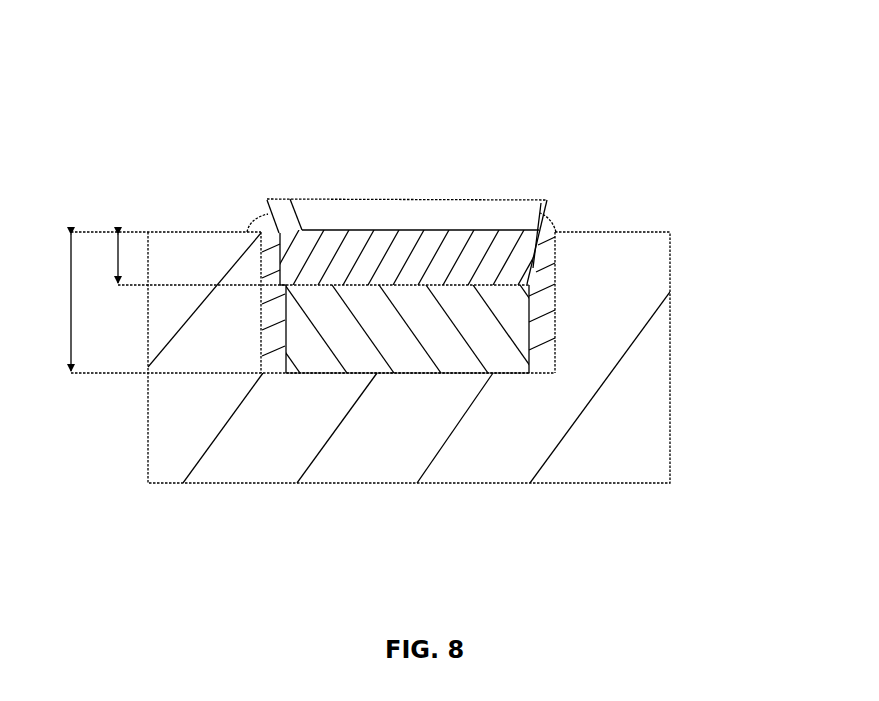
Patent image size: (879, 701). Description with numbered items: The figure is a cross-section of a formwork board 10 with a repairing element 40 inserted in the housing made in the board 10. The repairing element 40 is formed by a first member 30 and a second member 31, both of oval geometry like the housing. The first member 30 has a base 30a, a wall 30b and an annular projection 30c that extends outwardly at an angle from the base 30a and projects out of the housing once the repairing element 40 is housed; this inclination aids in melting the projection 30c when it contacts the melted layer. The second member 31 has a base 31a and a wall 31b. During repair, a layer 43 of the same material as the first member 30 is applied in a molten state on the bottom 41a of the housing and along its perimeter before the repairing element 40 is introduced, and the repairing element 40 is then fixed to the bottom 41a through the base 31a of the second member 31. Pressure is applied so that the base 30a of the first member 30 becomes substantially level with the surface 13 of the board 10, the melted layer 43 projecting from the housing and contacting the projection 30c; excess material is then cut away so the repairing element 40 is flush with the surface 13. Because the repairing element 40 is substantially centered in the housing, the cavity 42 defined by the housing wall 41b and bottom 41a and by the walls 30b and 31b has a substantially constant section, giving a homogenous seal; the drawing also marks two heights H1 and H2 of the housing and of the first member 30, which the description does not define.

The board 10 is at (597, 455).
The surface 13 is at (618, 230).
The first member 30 is at (369, 196).
The base 30a is at (413, 228).
The wall 30b is at (537, 266).
The annular projection 30c is at (275, 226).
The second member 31 is at (327, 425).
The base 31a is at (503, 375).
The wall 31b is at (285, 323).
The repairing element 40 is at (276, 172).
The bottom 41a is at (313, 373).
The wall 41b is at (556, 358).
The cavity 42 is at (285, 292).
The layer 43 is at (540, 233).
The depth of recess H1 is at (50, 302).
The height of lower lid portion H2 is at (305, 259).